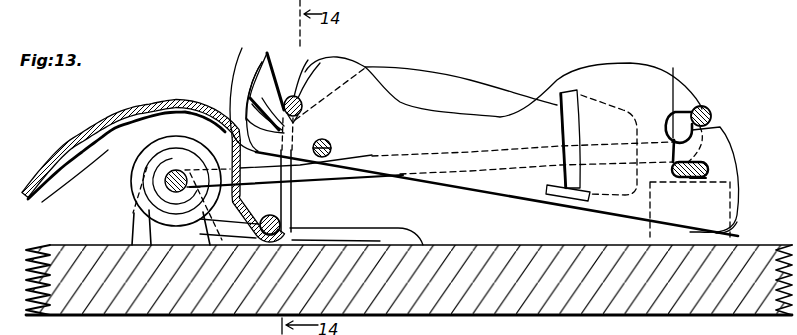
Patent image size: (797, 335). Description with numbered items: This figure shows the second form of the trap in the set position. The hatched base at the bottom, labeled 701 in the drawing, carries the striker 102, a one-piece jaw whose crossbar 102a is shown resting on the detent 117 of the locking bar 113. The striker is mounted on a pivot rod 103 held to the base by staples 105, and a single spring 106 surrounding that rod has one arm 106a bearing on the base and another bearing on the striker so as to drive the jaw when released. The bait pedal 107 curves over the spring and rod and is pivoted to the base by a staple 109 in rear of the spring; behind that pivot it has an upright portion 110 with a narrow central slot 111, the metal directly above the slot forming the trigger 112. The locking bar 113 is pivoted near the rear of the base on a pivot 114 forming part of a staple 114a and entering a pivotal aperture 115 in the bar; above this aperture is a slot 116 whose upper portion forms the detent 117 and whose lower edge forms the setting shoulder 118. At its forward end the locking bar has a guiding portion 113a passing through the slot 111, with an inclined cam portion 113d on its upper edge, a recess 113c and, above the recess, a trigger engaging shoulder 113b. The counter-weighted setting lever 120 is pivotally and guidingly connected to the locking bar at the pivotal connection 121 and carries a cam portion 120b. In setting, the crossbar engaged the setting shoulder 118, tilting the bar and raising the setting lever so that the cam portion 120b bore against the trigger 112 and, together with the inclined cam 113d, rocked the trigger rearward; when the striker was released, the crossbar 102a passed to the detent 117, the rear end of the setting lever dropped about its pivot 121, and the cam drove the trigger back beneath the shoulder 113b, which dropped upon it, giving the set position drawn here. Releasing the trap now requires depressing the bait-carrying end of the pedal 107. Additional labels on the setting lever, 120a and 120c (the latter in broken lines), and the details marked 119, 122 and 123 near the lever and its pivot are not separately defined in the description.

The ground 701 is at (120, 316).
The striker 102 is at (347, 184).
The crossbar 102a is at (709, 113).
The pivot rod 103 is at (164, 181).
The staples 105 is at (140, 225).
The spring 106 is at (143, 160).
The spring arm 106a is at (393, 233).
The bait pedal 107 is at (78, 139).
The pivot 109 is at (212, 237).
The upright portion 110 is at (290, 228).
The slot 111 is at (285, 203).
The trigger 112 is at (289, 96).
The locking bar 113 is at (467, 119).
The guiding portion 113a is at (245, 110).
The trigger engaging shoulder 113b is at (302, 75).
The recess 113c is at (258, 95).
The inclined cam portion 113d is at (250, 101).
The pivot 114 is at (708, 167).
The staple 114a is at (733, 226).
The pivotal aperture 115 is at (708, 175).
The slot 116 is at (680, 93).
The detent 117 is at (692, 95).
The setting shoulder 118 is at (717, 125).
The plate 119 is at (566, 126).
The setting lever 120 is at (438, 78).
The spring arm 120a is at (264, 80).
The cam portion 120b is at (268, 80).
The hidden arm position 120c is at (300, 124).
The pivotal connection 121 is at (331, 148).
The pin head 122 is at (330, 142).
The foot plate 123 is at (547, 187).